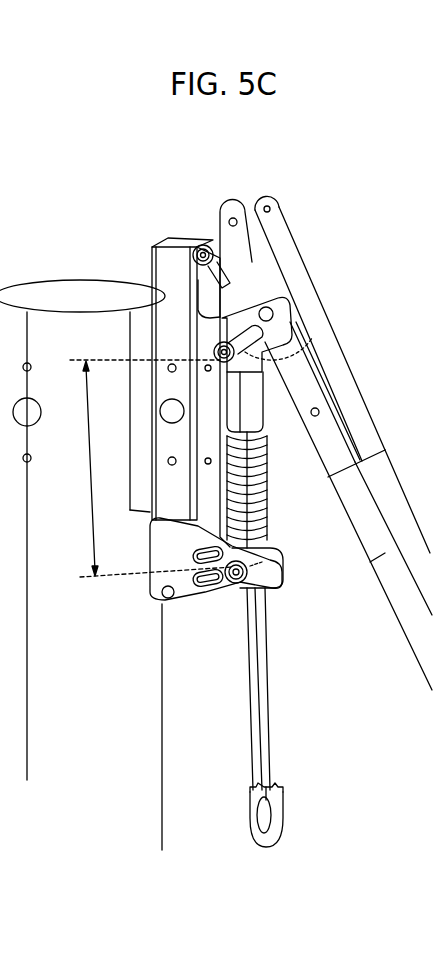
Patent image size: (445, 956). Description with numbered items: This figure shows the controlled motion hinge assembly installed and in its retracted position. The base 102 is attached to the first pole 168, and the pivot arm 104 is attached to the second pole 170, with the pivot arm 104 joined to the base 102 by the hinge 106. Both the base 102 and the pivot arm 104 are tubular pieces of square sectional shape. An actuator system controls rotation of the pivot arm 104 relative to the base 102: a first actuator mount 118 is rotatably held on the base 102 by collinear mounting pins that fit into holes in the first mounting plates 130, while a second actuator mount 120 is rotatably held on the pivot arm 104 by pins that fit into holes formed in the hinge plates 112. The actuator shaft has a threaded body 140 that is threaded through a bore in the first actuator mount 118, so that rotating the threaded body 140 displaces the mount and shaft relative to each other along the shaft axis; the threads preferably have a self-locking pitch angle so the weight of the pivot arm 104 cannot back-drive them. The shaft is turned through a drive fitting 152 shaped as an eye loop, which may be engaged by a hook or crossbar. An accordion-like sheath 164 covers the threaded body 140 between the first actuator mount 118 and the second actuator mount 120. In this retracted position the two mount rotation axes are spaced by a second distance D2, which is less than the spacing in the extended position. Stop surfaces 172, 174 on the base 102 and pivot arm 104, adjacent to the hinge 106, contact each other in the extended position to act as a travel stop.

The base 102 is at (138, 322).
The pivot arm 104 is at (362, 404).
The hinge 106 is at (197, 238).
The hinge plates 112 is at (268, 236).
The first actuator mount 118 is at (274, 569).
The second actuator mount 120 is at (293, 340).
The first mounting plates 130 is at (186, 594).
The threaded body 140 is at (262, 686).
The drive fitting 152 is at (280, 810).
The sheath 164 is at (262, 476).
The first pole 168 is at (150, 731).
The second pole 170 is at (388, 552).
The stop surface 172 is at (160, 233).
The stop surface 174 is at (251, 230).
The second distance D2 is at (151, 468).